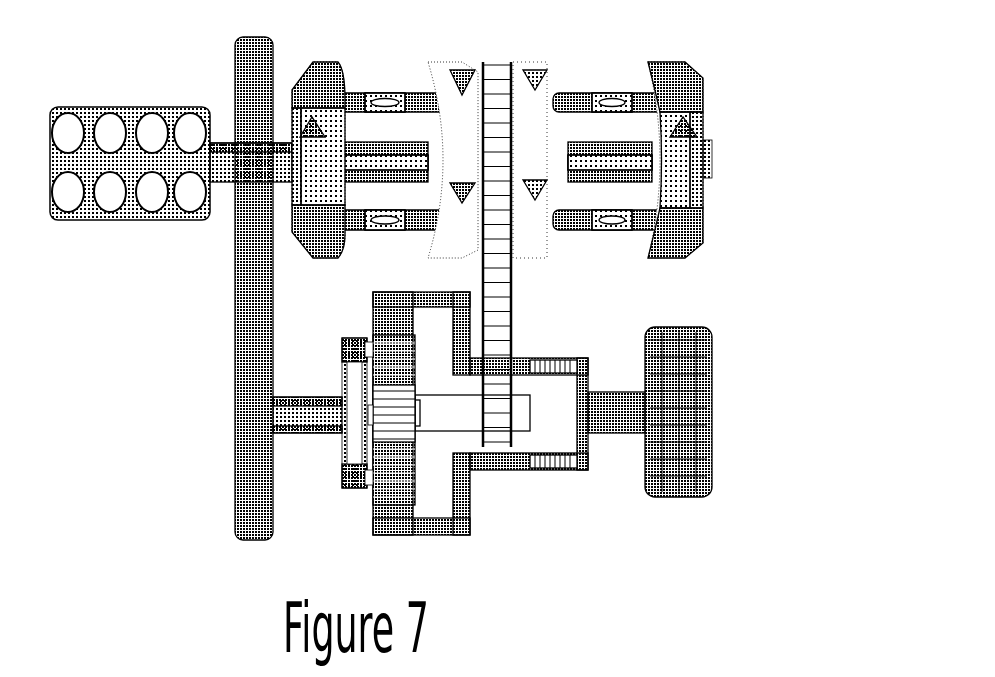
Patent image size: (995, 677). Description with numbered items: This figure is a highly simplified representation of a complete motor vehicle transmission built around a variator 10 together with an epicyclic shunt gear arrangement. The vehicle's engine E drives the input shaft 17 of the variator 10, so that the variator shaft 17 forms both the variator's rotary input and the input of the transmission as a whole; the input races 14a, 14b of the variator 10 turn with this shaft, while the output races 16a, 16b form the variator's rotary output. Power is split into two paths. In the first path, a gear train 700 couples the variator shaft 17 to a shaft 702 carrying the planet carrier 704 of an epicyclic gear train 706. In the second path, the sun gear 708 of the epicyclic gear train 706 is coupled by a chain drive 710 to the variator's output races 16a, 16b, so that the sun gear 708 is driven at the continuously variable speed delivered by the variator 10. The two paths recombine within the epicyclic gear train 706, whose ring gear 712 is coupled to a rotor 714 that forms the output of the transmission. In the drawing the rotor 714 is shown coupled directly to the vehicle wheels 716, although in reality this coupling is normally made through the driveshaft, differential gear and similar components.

The engine E is at (103, 220).
The variator 10 is at (752, 106).
The input race 14a is at (327, 57).
The input race 14b is at (663, 57).
The output race 16a is at (443, 57).
The output race 16b is at (549, 60).
The input shaft 17 is at (222, 143).
The gear train 700 is at (228, 305).
The shaft 702 is at (303, 437).
The planet carrier 704 is at (342, 365).
The epicyclic gear train 706 is at (461, 561).
The sun gear 708 is at (415, 393).
The chain drive 710 is at (515, 277).
The ring gear 712 is at (372, 520).
The rotor 714 is at (470, 507).
The vehicle wheels 716 is at (713, 477).